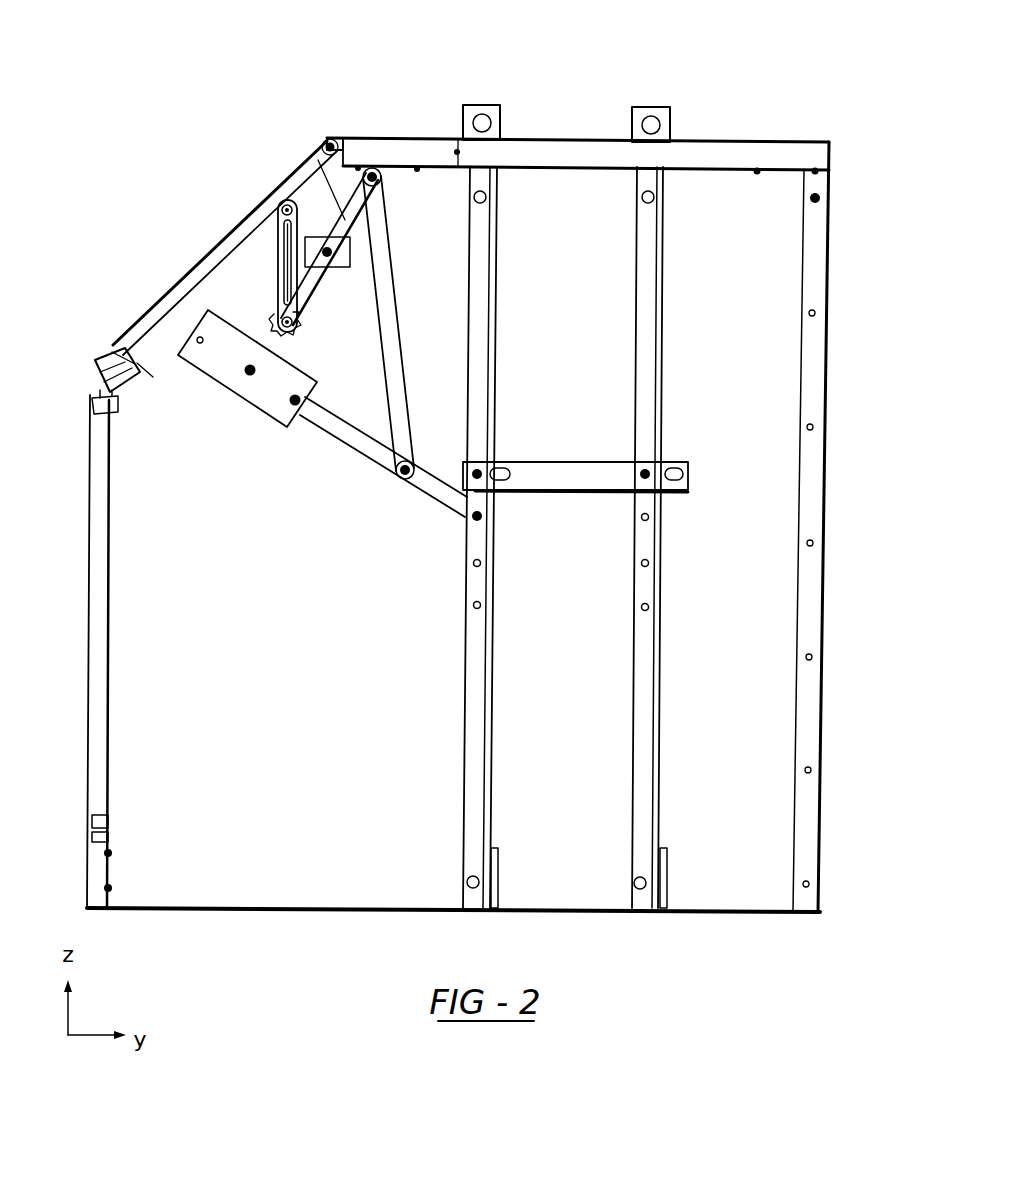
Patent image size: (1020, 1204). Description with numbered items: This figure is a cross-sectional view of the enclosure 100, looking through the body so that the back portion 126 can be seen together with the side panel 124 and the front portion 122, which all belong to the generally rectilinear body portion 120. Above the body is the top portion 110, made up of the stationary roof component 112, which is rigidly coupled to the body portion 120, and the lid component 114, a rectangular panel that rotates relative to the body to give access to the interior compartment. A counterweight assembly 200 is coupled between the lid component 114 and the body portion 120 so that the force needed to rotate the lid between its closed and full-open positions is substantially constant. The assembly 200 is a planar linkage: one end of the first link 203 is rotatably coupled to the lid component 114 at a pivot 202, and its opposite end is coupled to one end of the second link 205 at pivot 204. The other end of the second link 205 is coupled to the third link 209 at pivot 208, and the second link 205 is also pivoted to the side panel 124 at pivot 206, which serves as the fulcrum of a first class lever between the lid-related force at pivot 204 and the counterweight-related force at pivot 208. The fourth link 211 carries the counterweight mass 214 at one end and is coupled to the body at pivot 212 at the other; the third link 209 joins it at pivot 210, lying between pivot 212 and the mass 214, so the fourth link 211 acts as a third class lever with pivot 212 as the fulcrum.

The enclosure 100 is at (181, 141).
The top portion 110 is at (704, 76).
The stationary roof component 112 is at (540, 140).
The lid component 114 is at (152, 317).
The body portion 120 is at (82, 487).
The front portion 122 is at (90, 625).
The side portion 124 is at (292, 720).
The back portion 126 is at (828, 495).
The counterweight assembly 200 is at (266, 454).
The pivot 202 is at (280, 190).
The first link 203 is at (283, 273).
The pivot 204 is at (303, 326).
The second link 205 is at (318, 160).
The pivot 206 is at (332, 262).
The pivot 208 is at (378, 170).
The third link 209 is at (388, 292).
The pivot 210 is at (393, 473).
The fourth link 211 is at (440, 493).
The pivot 212 is at (482, 516).
The counterweight mass 214 is at (262, 388).